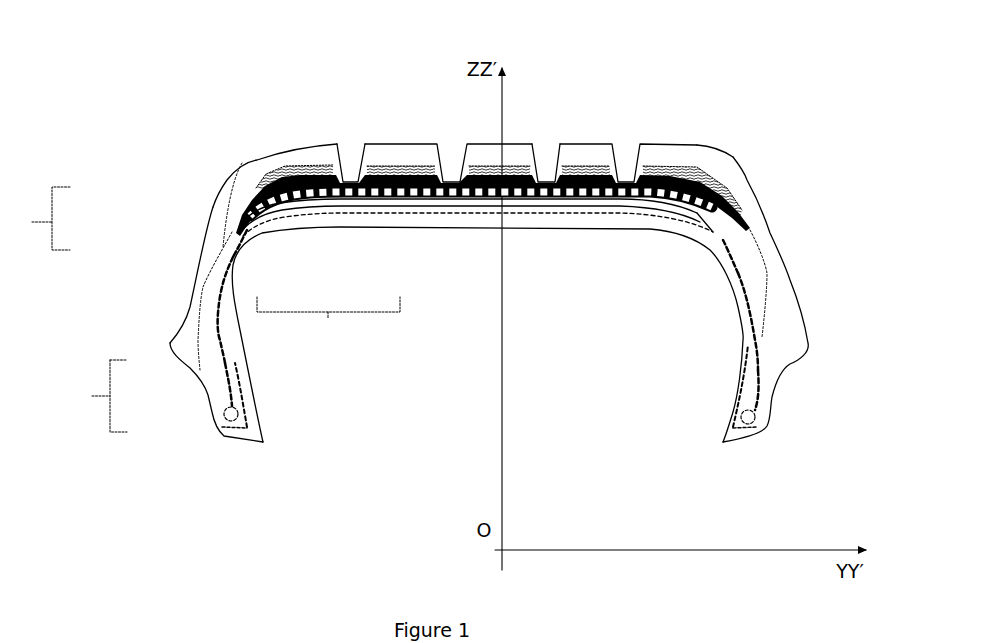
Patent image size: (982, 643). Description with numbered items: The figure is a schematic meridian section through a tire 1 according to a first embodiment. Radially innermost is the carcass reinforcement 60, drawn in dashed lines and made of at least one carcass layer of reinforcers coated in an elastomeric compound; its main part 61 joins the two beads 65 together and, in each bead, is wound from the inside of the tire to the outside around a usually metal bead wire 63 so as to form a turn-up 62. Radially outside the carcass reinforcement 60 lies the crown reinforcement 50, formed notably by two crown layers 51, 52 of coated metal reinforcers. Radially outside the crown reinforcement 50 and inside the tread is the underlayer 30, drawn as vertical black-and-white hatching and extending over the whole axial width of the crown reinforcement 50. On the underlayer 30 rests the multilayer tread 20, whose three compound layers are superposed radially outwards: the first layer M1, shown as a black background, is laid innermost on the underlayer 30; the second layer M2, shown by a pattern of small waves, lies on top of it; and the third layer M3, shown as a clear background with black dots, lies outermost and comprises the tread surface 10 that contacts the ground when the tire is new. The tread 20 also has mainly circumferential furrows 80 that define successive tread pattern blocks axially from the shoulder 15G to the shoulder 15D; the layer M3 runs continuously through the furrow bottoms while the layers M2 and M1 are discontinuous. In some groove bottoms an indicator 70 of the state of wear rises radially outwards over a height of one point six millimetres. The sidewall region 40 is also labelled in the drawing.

The tire 1 is at (309, 130).
The tread surface 10 is at (399, 140).
The indicator of the state of wear 70 is at (351, 168).
The furrow 80 is at (544, 153).
The shoulder 15G is at (241, 165).
The shoulder 15D is at (736, 157).
The sidewall 40 is at (216, 204).
The crown reinforcement 50 is at (386, 278).
The crown layer 51 is at (240, 213).
The crown layer 52 is at (226, 229).
The bead 65 is at (219, 286).
The carcass reinforcement 60 is at (412, 392).
The main part 61 is at (229, 364).
The turn-up 62 is at (219, 389).
The bead wire 63 is at (237, 413).
The underlayer 30 is at (489, 201).
The multilayer tread 20 is at (478, 274).
The first layer of elastomeric compound M1 is at (418, 203).
The second layer M2 is at (392, 204).
The third layer M3 is at (356, 210).